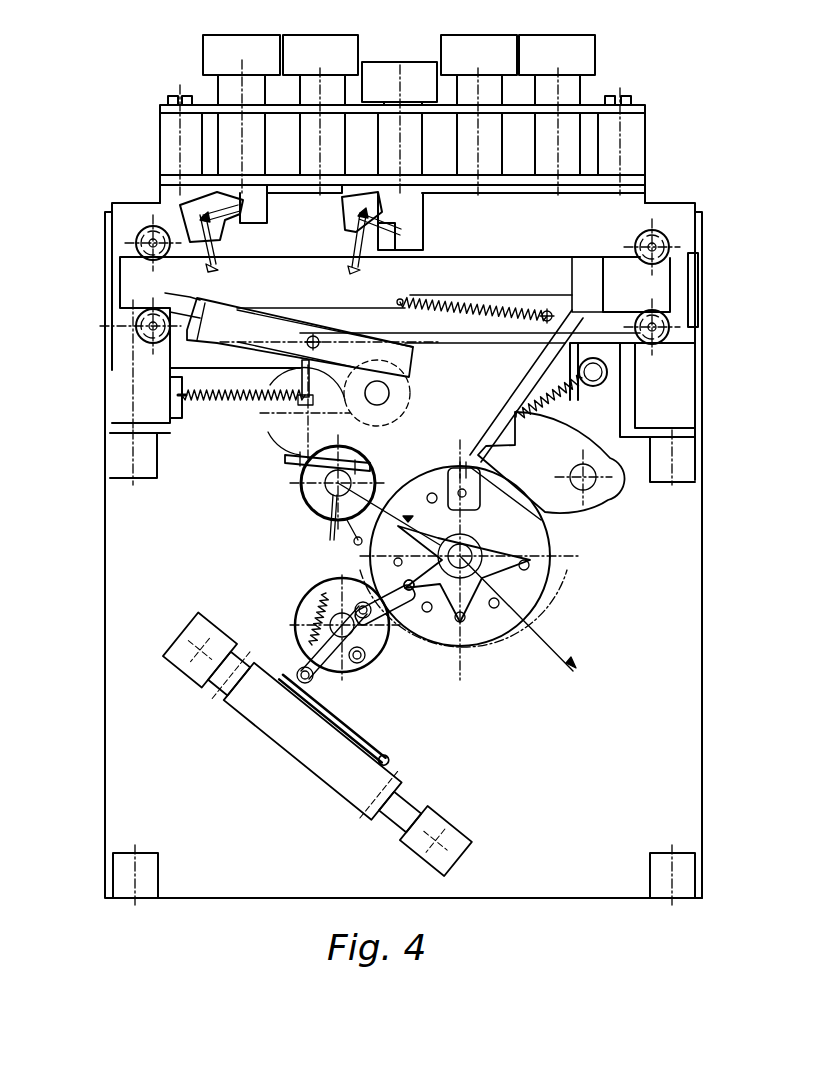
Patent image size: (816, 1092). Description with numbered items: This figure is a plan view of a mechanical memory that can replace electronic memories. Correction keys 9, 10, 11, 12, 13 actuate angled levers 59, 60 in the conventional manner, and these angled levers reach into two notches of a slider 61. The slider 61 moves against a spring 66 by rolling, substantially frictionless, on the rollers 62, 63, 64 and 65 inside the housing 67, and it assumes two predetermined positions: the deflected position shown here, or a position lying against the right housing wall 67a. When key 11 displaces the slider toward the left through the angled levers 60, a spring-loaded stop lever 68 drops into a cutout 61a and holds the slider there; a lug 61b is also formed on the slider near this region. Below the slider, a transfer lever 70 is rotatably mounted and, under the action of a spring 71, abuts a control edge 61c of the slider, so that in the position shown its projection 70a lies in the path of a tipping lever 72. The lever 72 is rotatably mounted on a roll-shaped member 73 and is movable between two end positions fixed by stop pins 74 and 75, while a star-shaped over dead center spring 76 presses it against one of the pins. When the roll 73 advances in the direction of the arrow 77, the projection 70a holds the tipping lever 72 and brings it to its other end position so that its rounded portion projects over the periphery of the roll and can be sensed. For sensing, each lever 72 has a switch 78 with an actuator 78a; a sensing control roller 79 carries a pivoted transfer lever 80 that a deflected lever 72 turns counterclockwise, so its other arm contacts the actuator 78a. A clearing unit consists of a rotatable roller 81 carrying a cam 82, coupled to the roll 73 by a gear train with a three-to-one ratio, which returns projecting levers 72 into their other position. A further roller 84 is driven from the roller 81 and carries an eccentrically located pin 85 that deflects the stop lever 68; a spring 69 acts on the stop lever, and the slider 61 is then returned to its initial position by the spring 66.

The correction key 9 is at (228, 43).
The correction key 10 is at (321, 43).
The correction key 11 is at (387, 70).
The correction key 12 is at (475, 48).
The correction key 13 is at (554, 48).
The angled lever 59 is at (178, 200).
The angled lever 60 is at (362, 267).
The slider 61 is at (512, 278).
The cutout 61a is at (140, 322).
The slide bar lug 61b is at (176, 298).
The control edge 61c is at (578, 314).
The roller 62 is at (661, 240).
The roller 63 is at (668, 333).
The roller 64 is at (136, 243).
The roller 65 is at (140, 337).
The spring 66 is at (461, 307).
The housing 67 is at (703, 441).
The right housing wall 67a is at (699, 287).
The stop lever 68 is at (222, 348).
The spring 69 is at (237, 410).
The transfer lever 70 is at (573, 439).
The projection 70a is at (463, 463).
The spring 71 is at (602, 400).
The tipping lever 72 is at (511, 480).
The roll-shaped member 73 is at (548, 569).
The stop pin 74 is at (427, 498).
The stop pin 75 is at (548, 512).
The over dead center spring 76 is at (542, 530).
The arrow 77 is at (585, 650).
The switch 78 is at (405, 774).
The switch actuator 78a is at (318, 684).
The sensing control roller 79 is at (305, 616).
The transfer lever 80 is at (381, 636).
The rotatable roller 81 is at (300, 498).
The cam 82 is at (340, 453).
The roller 84 is at (402, 400).
The eccentrically located pin 85 is at (398, 384).